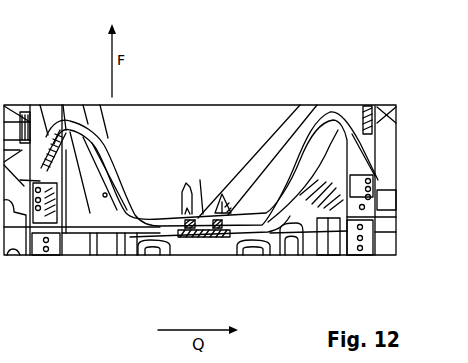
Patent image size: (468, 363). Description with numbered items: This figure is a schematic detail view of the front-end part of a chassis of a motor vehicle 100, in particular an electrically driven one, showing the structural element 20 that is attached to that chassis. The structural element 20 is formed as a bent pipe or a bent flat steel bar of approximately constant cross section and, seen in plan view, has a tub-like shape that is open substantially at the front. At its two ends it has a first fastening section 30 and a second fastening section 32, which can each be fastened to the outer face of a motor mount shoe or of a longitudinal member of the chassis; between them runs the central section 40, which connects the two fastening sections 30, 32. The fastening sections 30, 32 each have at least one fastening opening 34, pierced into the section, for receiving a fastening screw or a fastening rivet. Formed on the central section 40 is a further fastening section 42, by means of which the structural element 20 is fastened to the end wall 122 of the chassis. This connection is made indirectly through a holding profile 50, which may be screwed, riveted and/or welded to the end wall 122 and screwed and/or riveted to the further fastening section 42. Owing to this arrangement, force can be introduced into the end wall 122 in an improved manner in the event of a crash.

The motor vehicle 100 is at (240, 101).
The structural element 20 is at (140, 208).
The fastening section 30 is at (43, 130).
The fastening section 32 is at (357, 113).
The fastening opening 34 is at (44, 256).
The central section 40 is at (148, 243).
The further fastening section 42 is at (218, 179).
The holding profile 50 is at (207, 188).
The end wall 122 is at (193, 243).